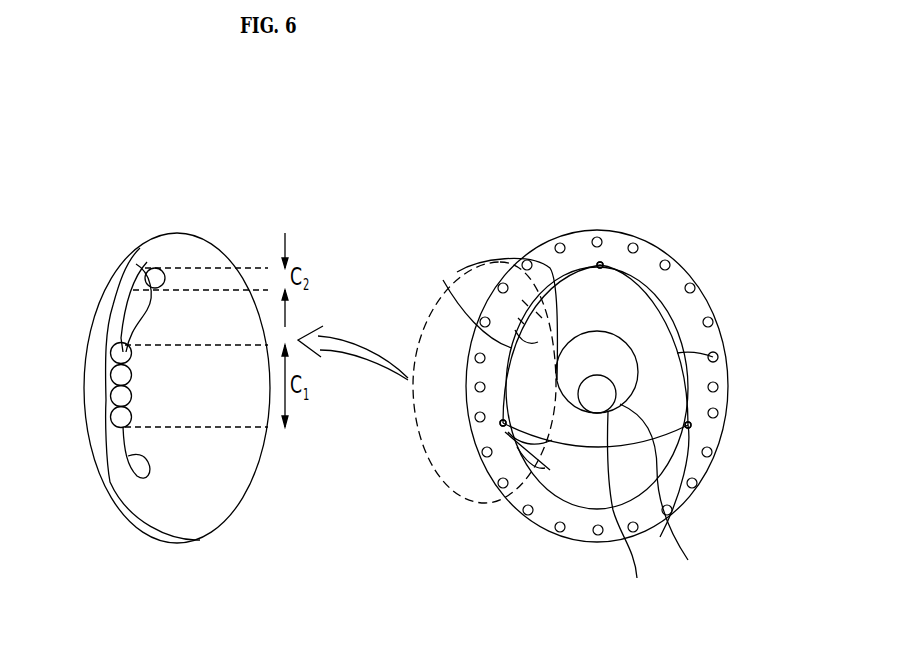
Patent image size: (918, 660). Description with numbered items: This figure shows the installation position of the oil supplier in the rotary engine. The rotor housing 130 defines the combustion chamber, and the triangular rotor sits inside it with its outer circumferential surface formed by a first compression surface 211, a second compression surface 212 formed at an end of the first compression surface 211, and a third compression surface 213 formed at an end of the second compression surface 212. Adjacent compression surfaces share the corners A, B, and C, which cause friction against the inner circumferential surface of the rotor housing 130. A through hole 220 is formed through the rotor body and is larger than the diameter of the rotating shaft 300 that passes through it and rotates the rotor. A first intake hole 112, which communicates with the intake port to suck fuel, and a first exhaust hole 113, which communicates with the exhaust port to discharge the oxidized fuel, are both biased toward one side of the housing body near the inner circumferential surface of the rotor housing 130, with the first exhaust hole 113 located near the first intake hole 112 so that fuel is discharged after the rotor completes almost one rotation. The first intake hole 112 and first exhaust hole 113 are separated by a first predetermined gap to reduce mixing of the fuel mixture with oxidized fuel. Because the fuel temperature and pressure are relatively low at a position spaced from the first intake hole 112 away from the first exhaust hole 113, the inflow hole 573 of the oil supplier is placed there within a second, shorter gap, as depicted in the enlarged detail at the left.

The first intake hole 112 is at (140, 308).
The first exhaust hole 113 is at (98, 476).
The rotor housing 130 is at (703, 308).
The first compression surface 211 is at (577, 283).
The second compression surface 212 is at (717, 357).
The third compression surface 213 is at (630, 512).
The through hole 220 is at (662, 499).
The rotating shaft 300 is at (597, 394).
The inflow hole 573 is at (148, 283).